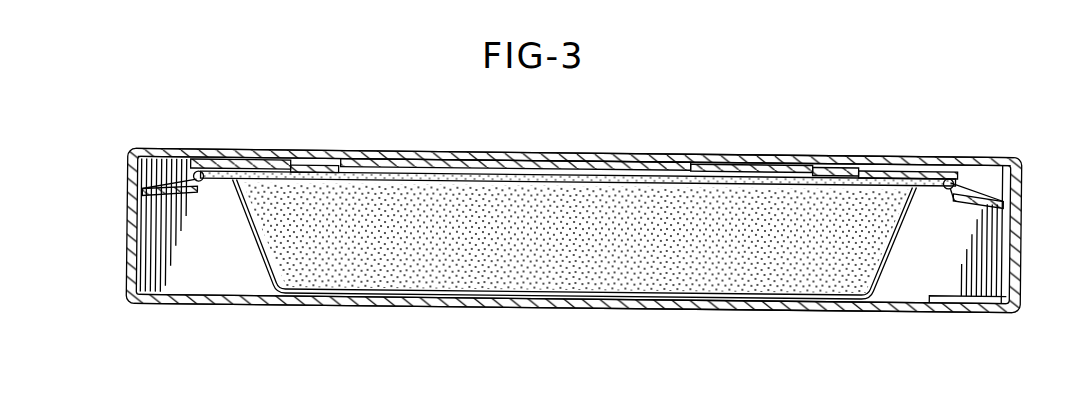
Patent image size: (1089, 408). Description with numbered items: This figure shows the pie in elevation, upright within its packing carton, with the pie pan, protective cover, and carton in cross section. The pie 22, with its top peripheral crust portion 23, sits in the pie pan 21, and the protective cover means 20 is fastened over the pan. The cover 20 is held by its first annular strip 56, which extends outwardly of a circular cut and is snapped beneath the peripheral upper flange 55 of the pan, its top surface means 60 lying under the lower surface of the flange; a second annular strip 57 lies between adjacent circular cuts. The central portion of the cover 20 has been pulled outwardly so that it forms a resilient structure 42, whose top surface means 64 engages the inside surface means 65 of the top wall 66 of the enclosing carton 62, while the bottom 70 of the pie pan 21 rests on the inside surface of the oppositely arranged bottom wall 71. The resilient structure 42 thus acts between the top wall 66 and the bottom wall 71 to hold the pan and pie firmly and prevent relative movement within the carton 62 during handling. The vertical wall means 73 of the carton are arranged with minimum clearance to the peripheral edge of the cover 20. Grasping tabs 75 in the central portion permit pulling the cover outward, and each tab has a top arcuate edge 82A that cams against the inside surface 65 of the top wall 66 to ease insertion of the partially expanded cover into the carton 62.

The protective cover means 20 is at (900, 165).
The pie pan 21 is at (877, 277).
The pie 22 is at (410, 272).
The top peripheral crust portion 23 is at (230, 178).
The resilient structure 42 is at (463, 156).
The peripheral upper flange 55 is at (945, 186).
The first annular strip 56 is at (963, 188).
The second annular strip 57 is at (937, 178).
The top surface means 60 is at (947, 200).
The enclosing carton 62 is at (185, 309).
The top surface means 64 is at (760, 161).
The inside surface means 65 is at (697, 161).
The top wall 66 is at (620, 155).
The bottom 70 is at (752, 297).
The bottom wall 71 is at (668, 300).
The vertical wall means 73 is at (128, 222).
The grasping tab 75 is at (353, 161).
The top arcuate edge 82A is at (337, 166).